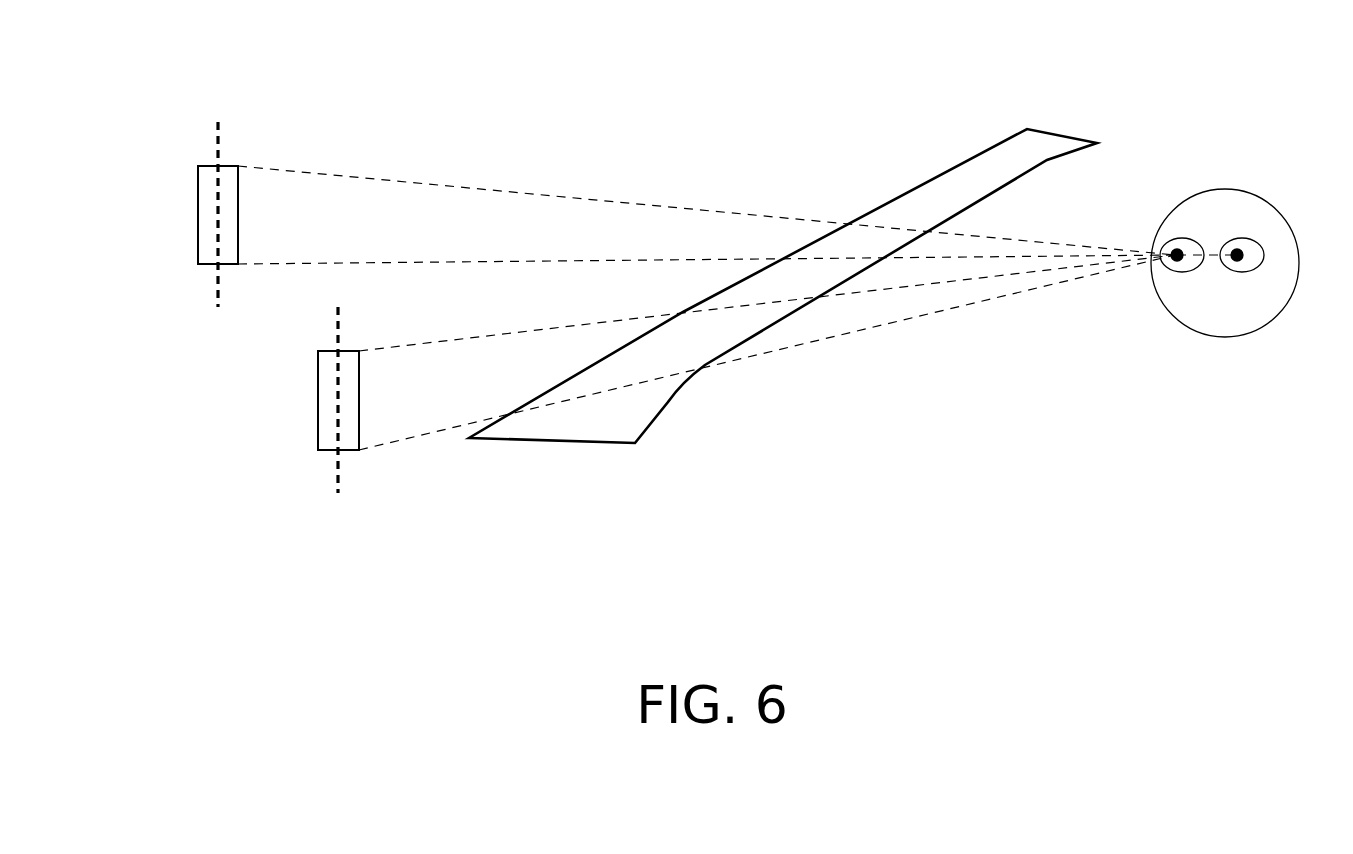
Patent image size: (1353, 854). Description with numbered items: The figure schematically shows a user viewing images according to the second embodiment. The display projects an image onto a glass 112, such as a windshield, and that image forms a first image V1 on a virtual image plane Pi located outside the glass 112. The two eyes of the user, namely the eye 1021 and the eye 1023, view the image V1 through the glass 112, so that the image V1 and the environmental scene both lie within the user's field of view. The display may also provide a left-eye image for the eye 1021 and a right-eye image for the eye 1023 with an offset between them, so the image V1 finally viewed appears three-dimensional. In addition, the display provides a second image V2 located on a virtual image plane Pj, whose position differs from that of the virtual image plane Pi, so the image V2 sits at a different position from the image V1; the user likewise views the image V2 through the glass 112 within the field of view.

The glass 112 is at (948, 187).
The eye 1021 is at (1253, 238).
The eye 1023 is at (1187, 238).
The image V1 is at (200, 194).
The image V2 is at (322, 406).
The virtual image plane Pi is at (220, 125).
The virtual image plane Pj is at (340, 472).